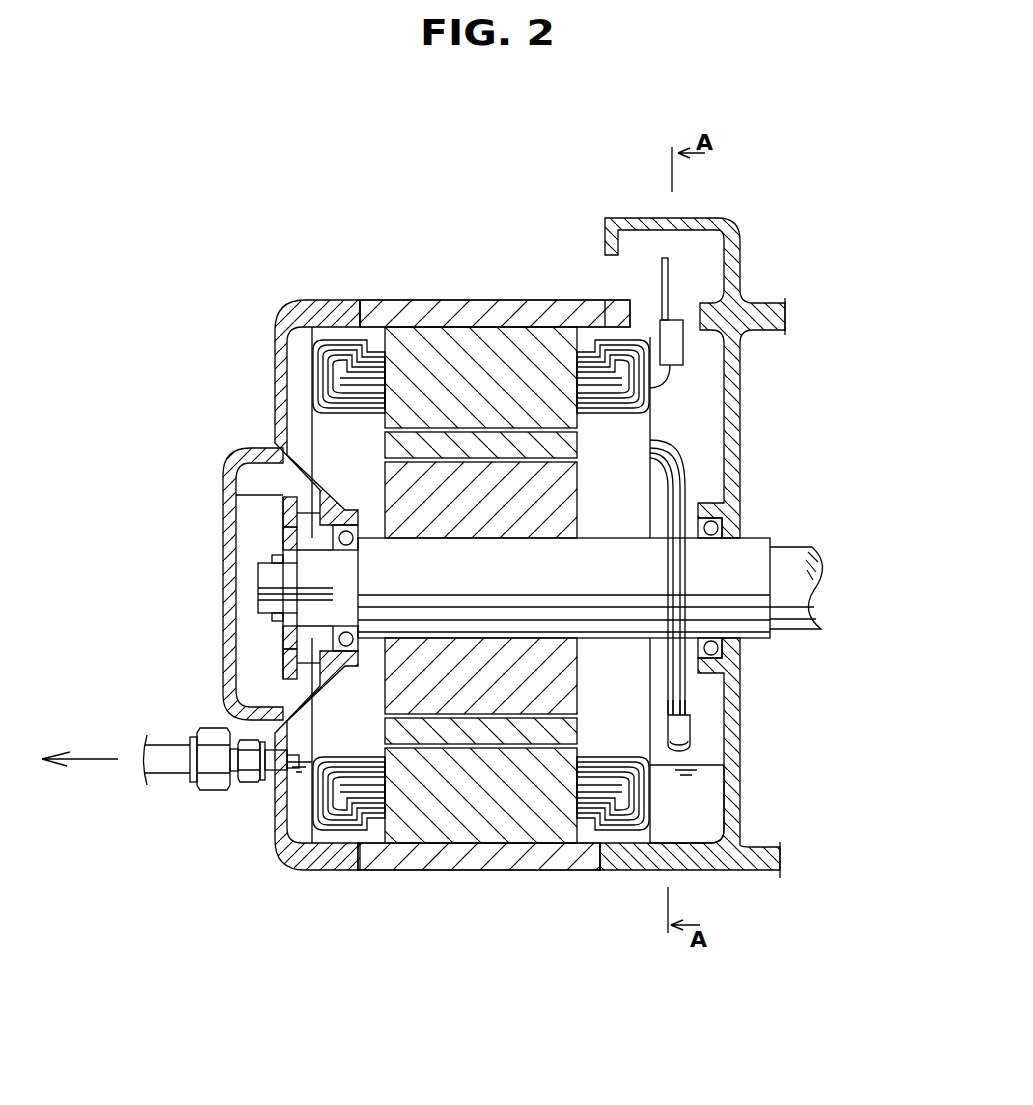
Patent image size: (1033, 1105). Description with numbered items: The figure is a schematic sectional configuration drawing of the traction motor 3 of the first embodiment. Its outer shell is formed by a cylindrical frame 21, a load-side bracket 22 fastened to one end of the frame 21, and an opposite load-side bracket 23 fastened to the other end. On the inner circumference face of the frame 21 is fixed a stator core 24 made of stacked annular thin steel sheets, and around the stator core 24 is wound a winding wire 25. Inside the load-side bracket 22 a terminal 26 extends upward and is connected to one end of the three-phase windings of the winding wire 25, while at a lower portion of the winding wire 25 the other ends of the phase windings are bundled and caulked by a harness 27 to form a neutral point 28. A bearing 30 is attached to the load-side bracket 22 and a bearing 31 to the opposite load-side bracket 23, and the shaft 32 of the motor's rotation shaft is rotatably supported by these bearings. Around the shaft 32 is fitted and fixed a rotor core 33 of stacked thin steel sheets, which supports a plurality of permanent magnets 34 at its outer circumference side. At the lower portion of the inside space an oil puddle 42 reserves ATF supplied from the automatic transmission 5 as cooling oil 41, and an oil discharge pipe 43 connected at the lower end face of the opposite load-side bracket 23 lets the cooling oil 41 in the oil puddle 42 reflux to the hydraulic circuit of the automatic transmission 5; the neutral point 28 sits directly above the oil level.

The traction motor 3 is at (292, 212).
The automatic transmission 5 is at (93, 760).
The frame 21 is at (402, 300).
The load-side bracket 22 is at (733, 312).
The opposite load-side bracket 23 is at (275, 333).
The stator core 24 is at (470, 375).
The winding wire 25 is at (640, 403).
The terminal 26 is at (664, 282).
The harness 27 is at (684, 728).
The neutral point 28 is at (687, 723).
The bearing 30 is at (720, 517).
The bearing 31 is at (224, 492).
The shaft 32 is at (748, 548).
The rotor core 33 is at (444, 678).
The permanent magnets 34 is at (507, 730).
The cooling oil 41 is at (694, 788).
The oil puddle 42 is at (682, 830).
The oil discharge pipe 43 is at (167, 768).